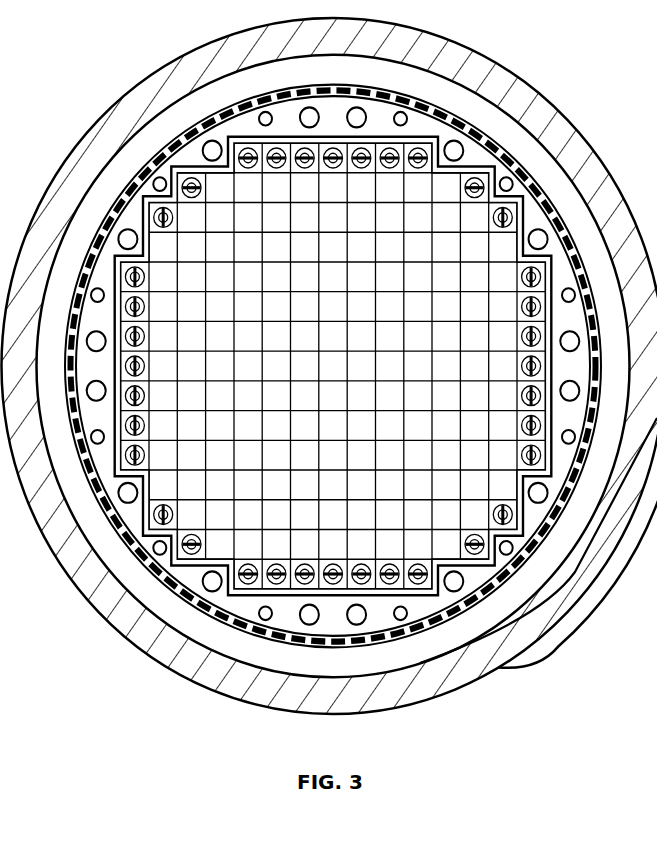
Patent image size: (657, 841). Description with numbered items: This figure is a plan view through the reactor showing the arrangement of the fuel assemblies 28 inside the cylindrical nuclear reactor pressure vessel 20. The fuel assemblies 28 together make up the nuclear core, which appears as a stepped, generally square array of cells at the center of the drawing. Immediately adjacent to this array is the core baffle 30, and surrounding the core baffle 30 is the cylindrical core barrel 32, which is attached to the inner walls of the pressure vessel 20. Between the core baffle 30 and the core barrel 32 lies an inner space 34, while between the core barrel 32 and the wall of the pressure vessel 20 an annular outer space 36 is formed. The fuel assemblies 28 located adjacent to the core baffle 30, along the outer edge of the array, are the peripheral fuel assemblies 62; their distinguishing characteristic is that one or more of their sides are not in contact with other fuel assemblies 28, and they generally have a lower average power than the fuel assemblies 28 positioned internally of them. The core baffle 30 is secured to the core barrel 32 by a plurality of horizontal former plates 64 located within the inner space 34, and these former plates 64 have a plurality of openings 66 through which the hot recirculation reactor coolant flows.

The pressure vessel 20 is at (217, 682).
The fuel assemblies 28 is at (532, 507).
The core baffle 30 is at (488, 573).
The core barrel 32 is at (473, 592).
The inner space 34 is at (445, 593).
The annular outer space 36 is at (408, 660).
The peripheral fuel assemblies 62 is at (555, 272).
The former plates 64 is at (572, 328).
The openings 66 is at (578, 349).